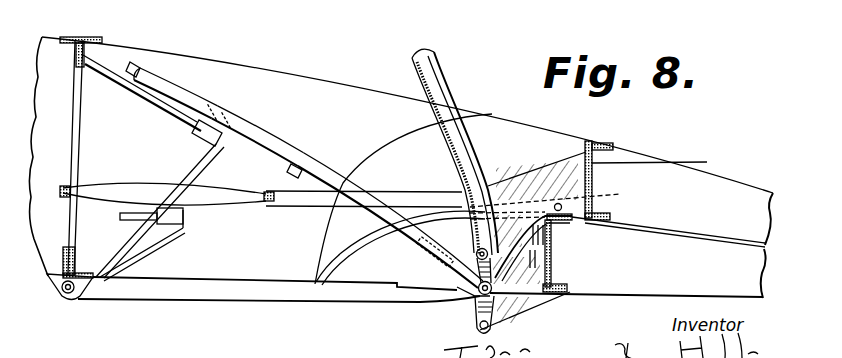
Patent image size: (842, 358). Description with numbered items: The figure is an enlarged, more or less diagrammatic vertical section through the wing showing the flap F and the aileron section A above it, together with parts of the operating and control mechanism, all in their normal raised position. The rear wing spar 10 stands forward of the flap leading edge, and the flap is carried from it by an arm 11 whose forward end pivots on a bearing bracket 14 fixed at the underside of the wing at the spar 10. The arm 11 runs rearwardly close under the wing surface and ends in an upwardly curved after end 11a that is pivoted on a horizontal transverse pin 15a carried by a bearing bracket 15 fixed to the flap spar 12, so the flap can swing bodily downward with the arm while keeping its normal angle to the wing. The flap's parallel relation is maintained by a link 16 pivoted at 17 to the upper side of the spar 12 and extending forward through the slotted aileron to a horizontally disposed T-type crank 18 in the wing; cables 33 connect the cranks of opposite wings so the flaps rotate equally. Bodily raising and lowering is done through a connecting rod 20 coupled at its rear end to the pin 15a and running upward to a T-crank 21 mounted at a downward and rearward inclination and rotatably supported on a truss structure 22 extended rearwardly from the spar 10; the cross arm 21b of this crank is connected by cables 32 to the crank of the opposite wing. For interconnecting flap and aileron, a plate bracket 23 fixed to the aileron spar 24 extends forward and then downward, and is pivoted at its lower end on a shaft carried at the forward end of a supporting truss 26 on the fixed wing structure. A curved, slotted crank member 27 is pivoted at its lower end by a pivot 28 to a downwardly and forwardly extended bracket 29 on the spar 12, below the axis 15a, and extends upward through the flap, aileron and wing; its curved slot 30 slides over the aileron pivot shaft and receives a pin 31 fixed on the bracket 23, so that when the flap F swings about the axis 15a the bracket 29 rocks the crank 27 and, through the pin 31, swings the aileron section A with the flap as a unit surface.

The rear wing beam or spar 10 is at (76, 116).
The arm 11 is at (220, 292).
The upwardly bent or curved after end 11a is at (473, 300).
The spar 12 is at (550, 259).
The pivot or bearing bracket 14 is at (53, 288).
The bearing bracket 15 is at (550, 281).
The pivot pin 15a is at (493, 296).
The link 16 is at (400, 200).
The pivotal connection 17 is at (557, 201).
The crank 18 is at (113, 195).
The connecting rod 20 is at (323, 187).
The T-crank 21 is at (240, 130).
The cross arm 21b is at (212, 95).
The supporting truss structure 22 is at (148, 100).
The bracket or plate member 23 is at (555, 158).
The spar 24 is at (667, 163).
The supporting truss 26 is at (432, 258).
The curved and slotted crank member 27 is at (450, 97).
The pivot 28 is at (490, 330).
The bracket 29 is at (547, 297).
The curved slot 30 is at (455, 133).
The pin 31 is at (477, 253).
The cables 32 is at (140, 68).
The cables 33 is at (65, 186).
The aileron section A is at (627, 160).
The flap F is at (658, 285).